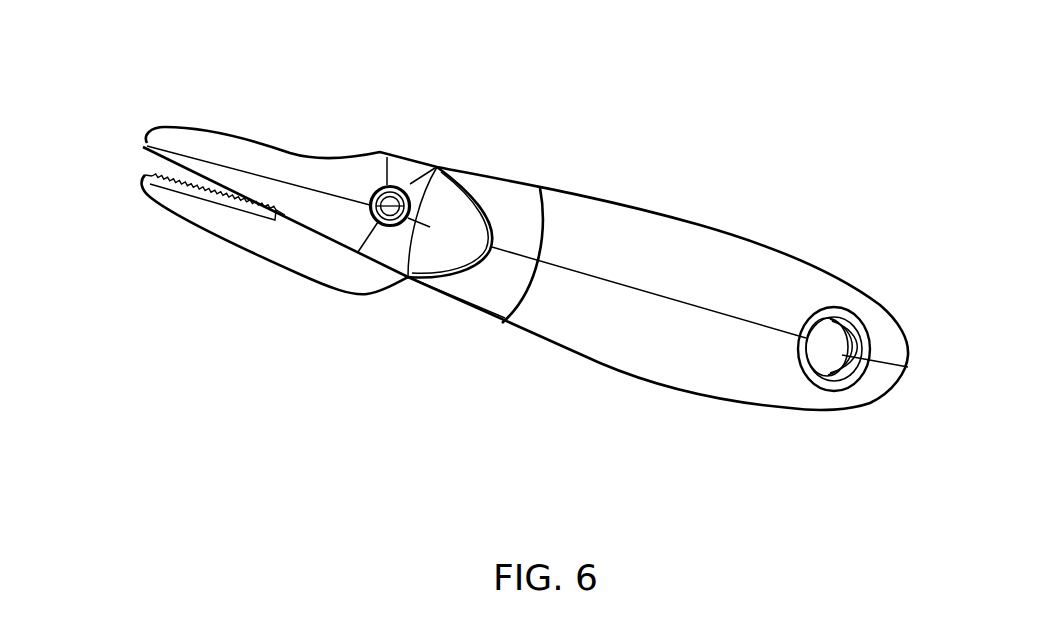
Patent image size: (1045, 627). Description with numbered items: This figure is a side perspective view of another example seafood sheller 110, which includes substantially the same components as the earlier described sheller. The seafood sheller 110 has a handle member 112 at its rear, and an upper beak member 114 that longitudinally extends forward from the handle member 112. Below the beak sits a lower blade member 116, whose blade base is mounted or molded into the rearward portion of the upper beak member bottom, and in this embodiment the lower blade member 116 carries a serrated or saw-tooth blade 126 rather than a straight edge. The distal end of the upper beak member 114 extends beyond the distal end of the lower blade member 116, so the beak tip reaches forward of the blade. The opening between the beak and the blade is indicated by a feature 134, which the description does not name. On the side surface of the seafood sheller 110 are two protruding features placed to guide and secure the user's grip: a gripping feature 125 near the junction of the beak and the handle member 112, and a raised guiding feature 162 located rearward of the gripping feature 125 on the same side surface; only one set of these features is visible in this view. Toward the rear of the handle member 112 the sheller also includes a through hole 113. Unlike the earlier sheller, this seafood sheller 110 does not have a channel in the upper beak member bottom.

The seafood sheller 110 is at (790, 100).
The handle member 112 is at (780, 273).
The through hole 113 is at (843, 380).
The upper beak member 114 is at (370, 170).
The lower blade member 116 is at (338, 265).
The gripping feature 125 is at (437, 167).
The serrated or saw-tooth blade 126 is at (198, 190).
The jaw gap 134 is at (153, 162).
The raised guiding feature 162 is at (450, 262).